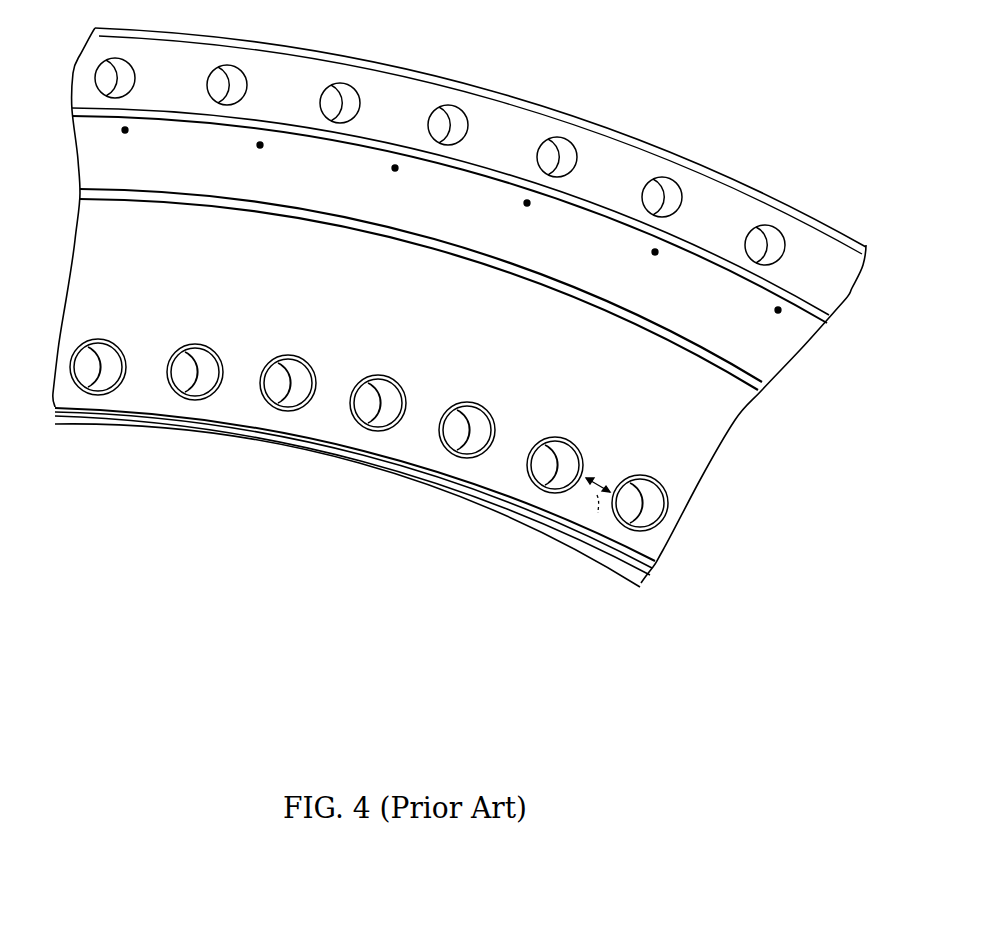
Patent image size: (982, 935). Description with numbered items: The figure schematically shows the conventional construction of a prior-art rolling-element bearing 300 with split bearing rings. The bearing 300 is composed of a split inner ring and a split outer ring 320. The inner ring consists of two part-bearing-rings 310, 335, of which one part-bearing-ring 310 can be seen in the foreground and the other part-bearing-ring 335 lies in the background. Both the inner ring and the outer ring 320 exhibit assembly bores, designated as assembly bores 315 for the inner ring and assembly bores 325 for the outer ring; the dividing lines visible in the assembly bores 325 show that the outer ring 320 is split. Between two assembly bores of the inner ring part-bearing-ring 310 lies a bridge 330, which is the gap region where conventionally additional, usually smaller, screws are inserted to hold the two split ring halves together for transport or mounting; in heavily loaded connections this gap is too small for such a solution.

The rolling-element bearing 300 is at (204, 638).
The part-bearing-ring 310 is at (717, 418).
The assembly bores 315 is at (652, 508).
The outer ring 320 is at (838, 297).
The assembly bores 325 is at (772, 236).
The bridge 330 is at (598, 513).
The part-bearing-ring 335 is at (476, 500).